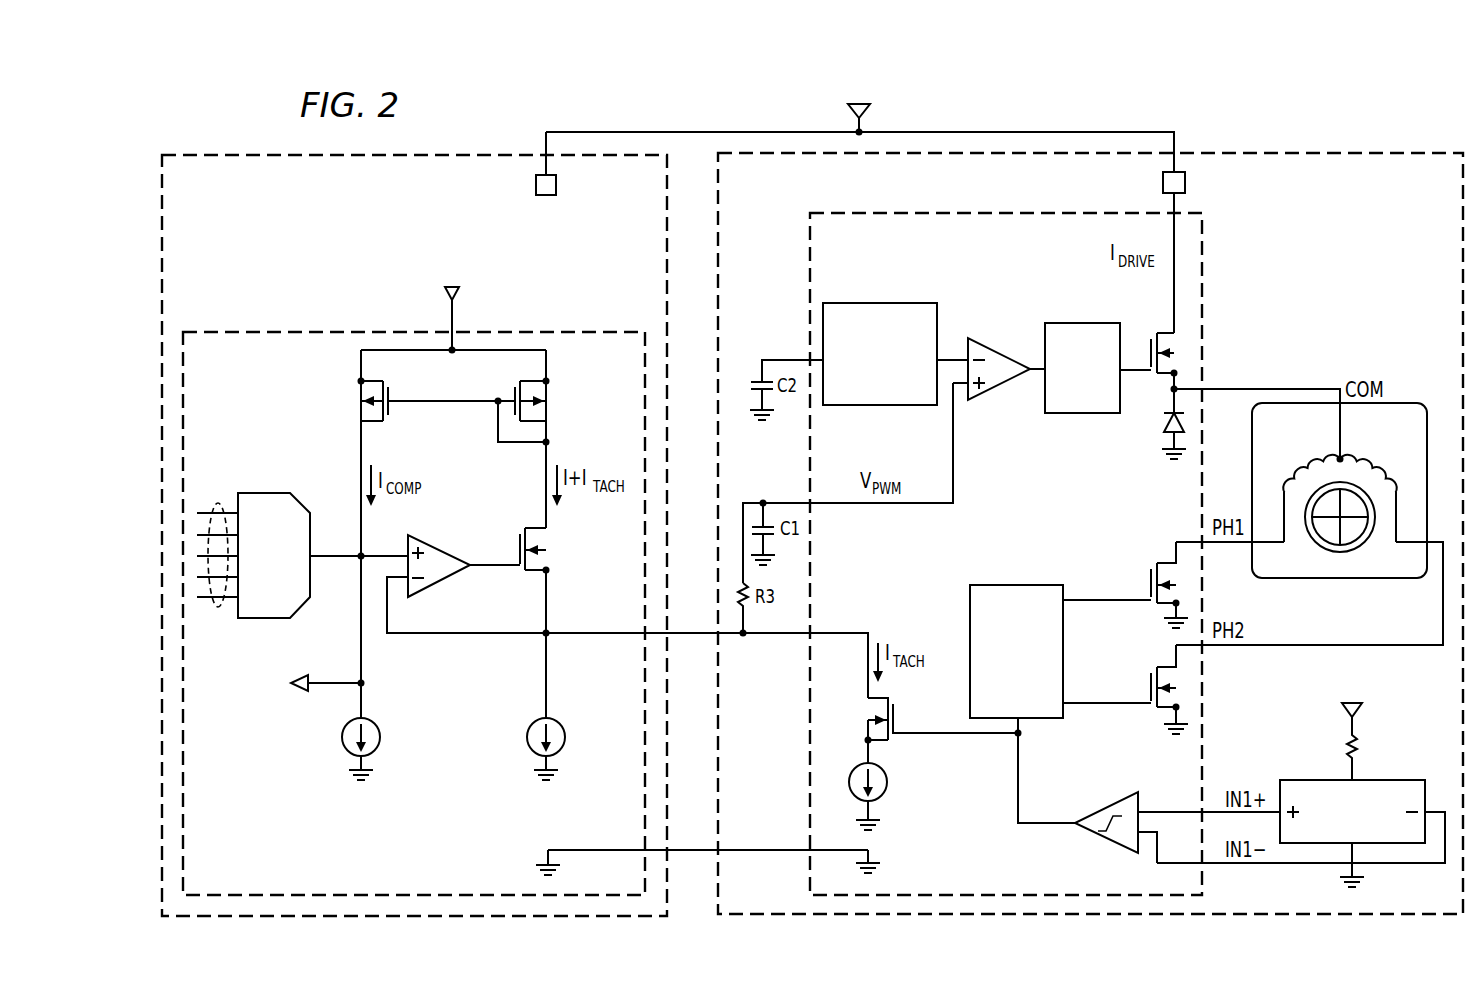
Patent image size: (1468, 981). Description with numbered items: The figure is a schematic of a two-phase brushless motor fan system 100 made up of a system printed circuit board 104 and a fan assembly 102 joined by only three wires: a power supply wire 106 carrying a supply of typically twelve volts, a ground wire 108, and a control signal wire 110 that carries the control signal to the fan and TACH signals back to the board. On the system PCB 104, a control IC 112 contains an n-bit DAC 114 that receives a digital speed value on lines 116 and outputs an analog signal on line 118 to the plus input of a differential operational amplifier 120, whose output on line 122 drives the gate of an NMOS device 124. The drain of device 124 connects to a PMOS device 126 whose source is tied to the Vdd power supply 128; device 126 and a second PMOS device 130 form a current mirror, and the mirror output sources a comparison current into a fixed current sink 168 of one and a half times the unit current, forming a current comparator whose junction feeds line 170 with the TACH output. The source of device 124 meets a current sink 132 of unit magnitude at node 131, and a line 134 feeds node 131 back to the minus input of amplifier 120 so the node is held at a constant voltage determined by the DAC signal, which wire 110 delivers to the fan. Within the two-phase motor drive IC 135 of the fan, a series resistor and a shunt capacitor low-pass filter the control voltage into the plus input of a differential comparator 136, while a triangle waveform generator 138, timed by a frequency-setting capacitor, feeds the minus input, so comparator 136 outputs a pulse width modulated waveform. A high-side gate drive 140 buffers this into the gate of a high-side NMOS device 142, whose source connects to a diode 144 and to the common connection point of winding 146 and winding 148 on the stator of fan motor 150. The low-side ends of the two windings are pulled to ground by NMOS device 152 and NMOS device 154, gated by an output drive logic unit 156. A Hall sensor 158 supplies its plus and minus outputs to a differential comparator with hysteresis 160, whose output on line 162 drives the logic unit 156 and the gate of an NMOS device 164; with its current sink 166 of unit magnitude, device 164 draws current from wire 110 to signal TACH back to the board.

The two-phase brushless motor fan system 100 is at (1355, 121).
The fan assembly 102 is at (1360, 295).
The system printed circuit board 104 is at (430, 242).
The power supply wire 106 is at (1068, 130).
The ground wire 108 is at (706, 852).
The control signal wire 110 is at (705, 635).
The control IC 112 is at (362, 870).
The n-bit DAC 114 is at (270, 493).
The lines 116 is at (212, 505).
The line 118 is at (345, 558).
The differential operational amplifier 120 is at (440, 547).
The line 122 is at (488, 568).
The NMOS device 124 is at (535, 528).
The PMOS device 126 is at (517, 391).
The Vdd power supply 128 is at (446, 298).
The second PMOS device 130 is at (390, 416).
The node 131 is at (549, 630).
The current sink 132 is at (567, 735).
The line 134 is at (450, 636).
The 2-phase BLM motor drive IC 135 is at (808, 257).
The differential comparator 136 is at (1000, 392).
The triangle waveform generator 138 is at (880, 406).
The high-side gate drive 140 is at (1082, 414).
The high-side NMOS device 142 is at (1160, 333).
The diode 144 is at (1162, 428).
The winding 146 is at (1296, 470).
The winding 148 is at (1384, 470).
The fan motor 150 is at (1339, 518).
The NMOS device 152 is at (1150, 575).
The NMOS device 154 is at (1150, 680).
The output drive logic unit 156 is at (999, 697).
The Hall sensor 158 is at (1316, 780).
The differential comparator with hysteresis 160 is at (1105, 806).
The line 162 is at (1045, 828).
The NMOS device 164 is at (896, 708).
The current sink 166 is at (889, 786).
The fixed current sink 168 is at (382, 736).
The line 170 is at (336, 682).